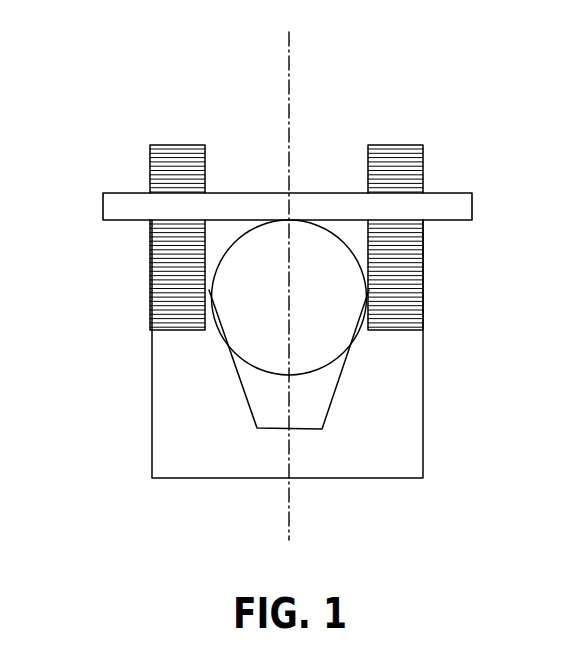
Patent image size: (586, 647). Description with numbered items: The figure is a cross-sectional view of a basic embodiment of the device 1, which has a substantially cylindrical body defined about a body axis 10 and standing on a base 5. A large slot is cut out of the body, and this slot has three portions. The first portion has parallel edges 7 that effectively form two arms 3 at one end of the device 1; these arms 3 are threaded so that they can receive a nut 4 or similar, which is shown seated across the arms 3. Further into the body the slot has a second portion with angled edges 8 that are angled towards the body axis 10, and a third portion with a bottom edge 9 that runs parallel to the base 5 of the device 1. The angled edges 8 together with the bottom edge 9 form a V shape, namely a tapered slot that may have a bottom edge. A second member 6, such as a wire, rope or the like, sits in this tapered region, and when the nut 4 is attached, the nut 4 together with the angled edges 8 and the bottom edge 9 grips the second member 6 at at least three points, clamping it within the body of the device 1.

The device 1 is at (101, 73).
The arms 3 is at (190, 162).
The nut 4 is at (447, 210).
The base 5 is at (347, 507).
The second member 6 is at (257, 278).
The parallel edges 7 is at (366, 182).
The angled edges 8 is at (327, 413).
The bottom edge 9 is at (270, 430).
The body axis 10 is at (290, 50).